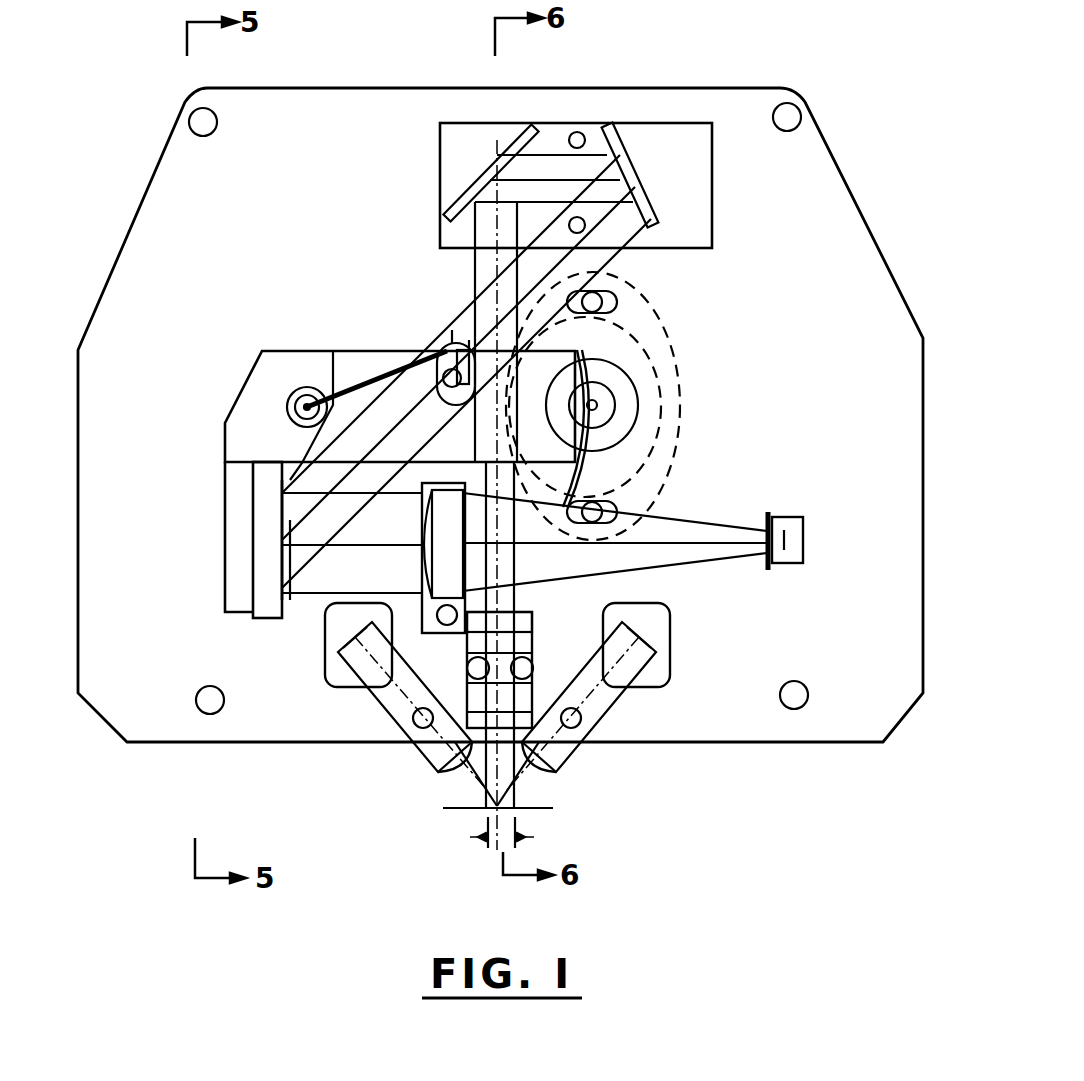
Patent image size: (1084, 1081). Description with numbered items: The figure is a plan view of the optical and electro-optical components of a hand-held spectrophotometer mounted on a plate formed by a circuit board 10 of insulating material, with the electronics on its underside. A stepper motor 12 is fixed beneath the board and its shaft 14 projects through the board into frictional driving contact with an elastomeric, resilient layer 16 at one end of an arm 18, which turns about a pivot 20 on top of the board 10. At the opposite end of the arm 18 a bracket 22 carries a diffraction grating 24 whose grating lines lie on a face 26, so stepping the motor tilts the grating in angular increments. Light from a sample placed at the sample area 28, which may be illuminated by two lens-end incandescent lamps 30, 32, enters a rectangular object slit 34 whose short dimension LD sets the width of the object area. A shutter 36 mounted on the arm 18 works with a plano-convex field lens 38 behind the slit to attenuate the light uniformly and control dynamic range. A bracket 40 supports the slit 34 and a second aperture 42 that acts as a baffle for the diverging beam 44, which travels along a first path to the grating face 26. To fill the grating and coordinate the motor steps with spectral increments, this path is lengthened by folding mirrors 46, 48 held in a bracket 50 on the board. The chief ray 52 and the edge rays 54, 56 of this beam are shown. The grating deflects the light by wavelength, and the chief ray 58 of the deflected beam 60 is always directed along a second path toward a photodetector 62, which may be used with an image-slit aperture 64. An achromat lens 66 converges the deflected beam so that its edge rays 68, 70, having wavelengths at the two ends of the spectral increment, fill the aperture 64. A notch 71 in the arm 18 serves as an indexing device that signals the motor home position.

The circuit board 10 is at (153, 190).
The stepper motor 12 is at (678, 365).
The shaft 14 is at (597, 405).
The elastomeric resilient layer 16 is at (585, 470).
The arm 18 is at (262, 367).
The pivot 20 is at (292, 417).
The bracket 22 is at (232, 545).
The diffraction grating 24 is at (268, 620).
The face 26 is at (285, 565).
The sample area 28 is at (521, 796).
The lamp 30 is at (378, 705).
The lamp 32 is at (616, 705).
The object slit 34 is at (535, 690).
The shutter 36 is at (345, 375).
The field lens 38 is at (466, 705).
The bracket 40 is at (532, 622).
The aperture 42 is at (525, 605).
The beam 44 is at (470, 238).
The folding mirror 46 is at (648, 163).
The folding mirror 48 is at (493, 160).
The bracket 50 is at (700, 190).
The chief ray 52 is at (410, 403).
The ray 54 is at (440, 328).
The ray 56 is at (305, 567).
The chief ray 58 is at (368, 545).
The deflected beam 60 is at (300, 598).
The photodetector 62 is at (785, 565).
The aperture 64 is at (768, 562).
The achromat lens 66 is at (445, 500).
The ray 68 is at (357, 488).
The ray 70 is at (410, 591).
The notch 71 is at (460, 347).